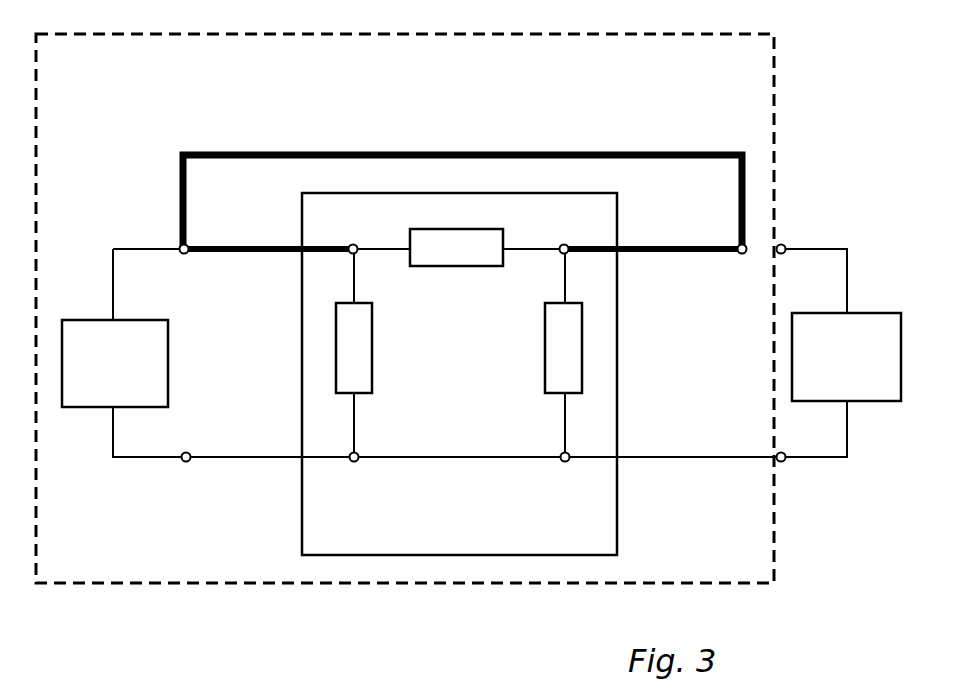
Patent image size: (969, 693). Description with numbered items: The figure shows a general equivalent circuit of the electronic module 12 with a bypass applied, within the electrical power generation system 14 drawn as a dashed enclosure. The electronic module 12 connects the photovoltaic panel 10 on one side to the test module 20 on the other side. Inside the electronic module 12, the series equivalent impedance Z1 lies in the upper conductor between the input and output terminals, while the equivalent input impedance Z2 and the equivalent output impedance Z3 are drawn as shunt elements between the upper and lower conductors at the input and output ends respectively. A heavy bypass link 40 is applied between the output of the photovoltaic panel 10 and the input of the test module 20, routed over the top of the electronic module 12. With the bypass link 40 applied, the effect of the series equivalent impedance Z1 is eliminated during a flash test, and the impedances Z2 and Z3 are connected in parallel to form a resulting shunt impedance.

The photovoltaic panel 10 is at (115, 363).
The electronic module 12 is at (366, 554).
The electrical power generation system 14 is at (37, 585).
The test module 20 is at (846, 357).
The bypass link 40 is at (446, 152).
The series equivalent impedance Z1 is at (456, 247).
The equivalent input impedance Z2 is at (373, 377).
The equivalent output impedance Z3 is at (545, 380).